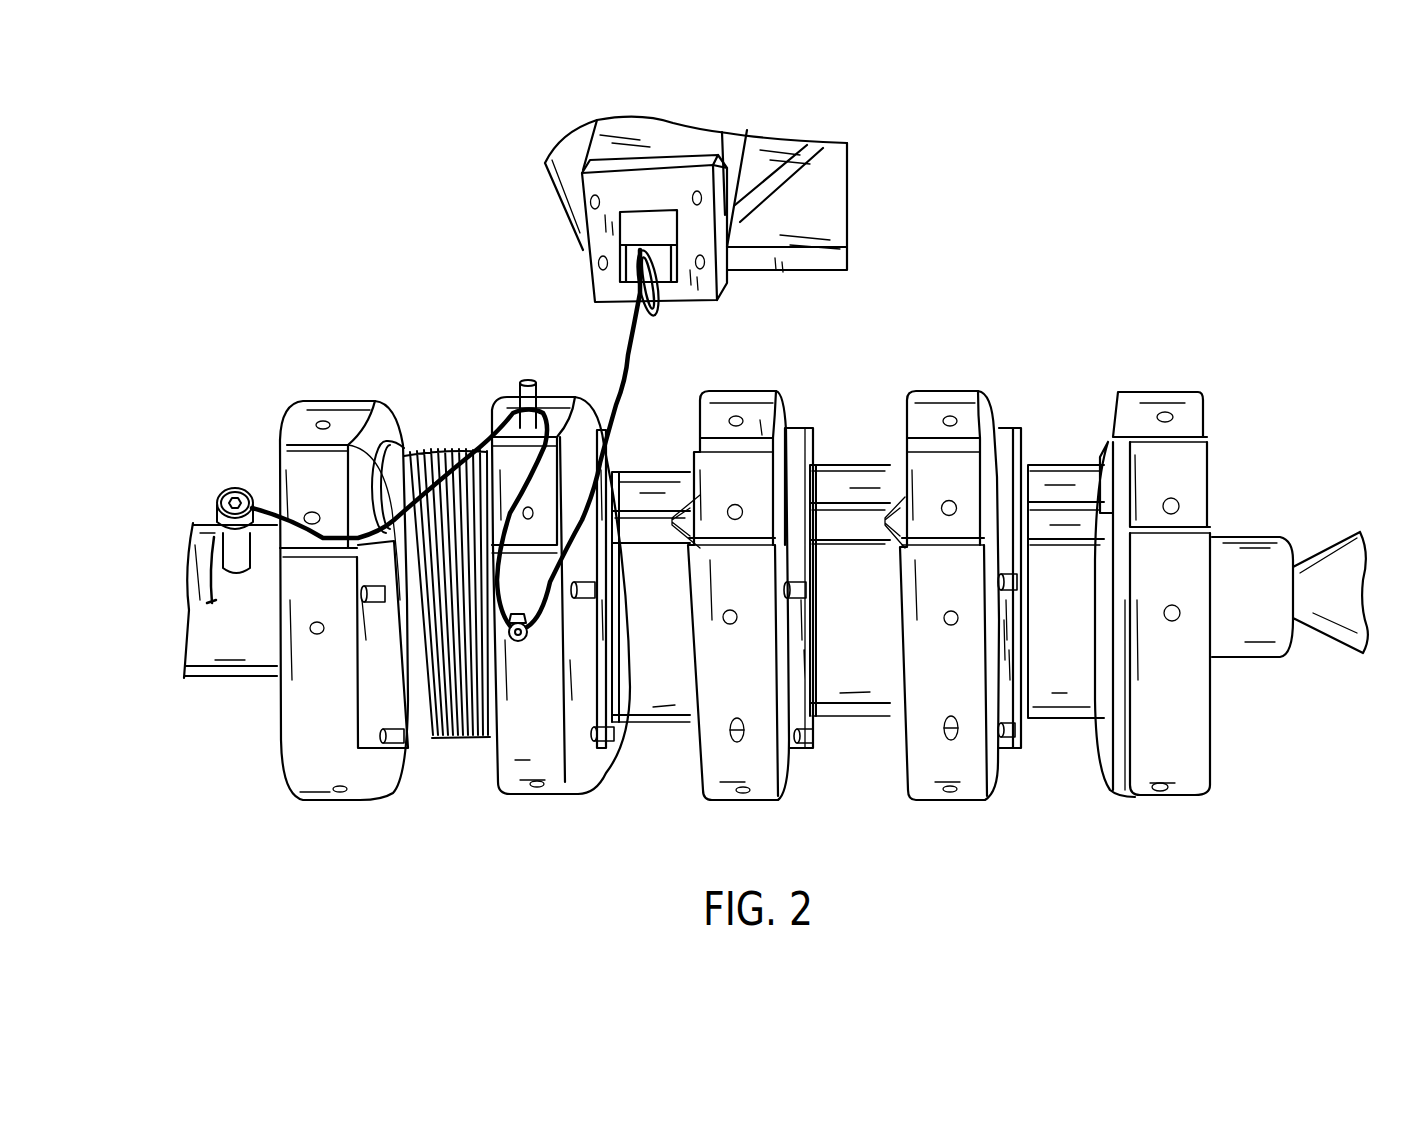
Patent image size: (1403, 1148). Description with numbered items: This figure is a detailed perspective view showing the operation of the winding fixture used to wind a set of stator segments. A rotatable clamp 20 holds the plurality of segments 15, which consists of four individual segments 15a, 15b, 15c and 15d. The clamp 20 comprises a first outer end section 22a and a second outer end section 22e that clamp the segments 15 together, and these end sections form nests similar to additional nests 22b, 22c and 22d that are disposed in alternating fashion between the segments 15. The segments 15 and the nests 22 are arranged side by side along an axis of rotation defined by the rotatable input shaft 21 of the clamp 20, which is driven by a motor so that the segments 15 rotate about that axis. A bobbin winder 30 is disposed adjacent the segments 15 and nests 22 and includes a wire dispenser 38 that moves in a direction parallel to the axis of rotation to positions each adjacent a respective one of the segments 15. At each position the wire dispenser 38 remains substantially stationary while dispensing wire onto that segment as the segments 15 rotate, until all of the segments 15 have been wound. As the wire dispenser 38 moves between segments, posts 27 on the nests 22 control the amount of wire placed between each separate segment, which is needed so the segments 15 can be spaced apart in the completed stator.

The bobbin winder 30 is at (558, 118).
The wire dispenser 38 is at (654, 318).
The posts 27 is at (532, 377).
The rotatable clamp 20 is at (346, 860).
The rotatable input shaft 21 is at (221, 663).
The nests 22 is at (310, 745).
The first outer end section 22a is at (307, 787).
The nest 22b is at (563, 785).
The nest 22c is at (723, 782).
The nest 22d is at (968, 782).
The second outer end section 22e is at (1185, 780).
The segments 15 is at (407, 700).
The segment 15a is at (428, 740).
The segment 15b is at (663, 700).
The segment 15c is at (847, 700).
The segment 15d is at (1060, 700).